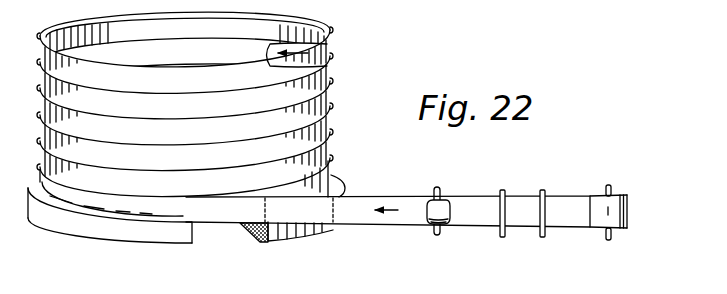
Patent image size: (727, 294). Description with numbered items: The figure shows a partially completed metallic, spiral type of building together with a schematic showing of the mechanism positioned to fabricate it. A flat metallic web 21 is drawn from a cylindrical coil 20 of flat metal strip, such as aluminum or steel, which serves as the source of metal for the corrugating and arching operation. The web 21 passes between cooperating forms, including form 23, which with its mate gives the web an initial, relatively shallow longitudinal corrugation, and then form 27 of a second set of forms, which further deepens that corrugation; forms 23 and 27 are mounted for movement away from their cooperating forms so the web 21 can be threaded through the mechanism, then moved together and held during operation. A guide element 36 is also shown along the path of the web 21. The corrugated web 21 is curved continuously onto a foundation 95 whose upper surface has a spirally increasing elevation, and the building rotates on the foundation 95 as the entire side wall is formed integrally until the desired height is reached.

The web 21 is at (327, 92).
The cylindrical coil 20 is at (628, 208).
The guide roller 36 is at (447, 205).
The cooperating form 27 is at (502, 233).
The cooperating form 23 is at (542, 238).
The foundation 95 is at (135, 234).